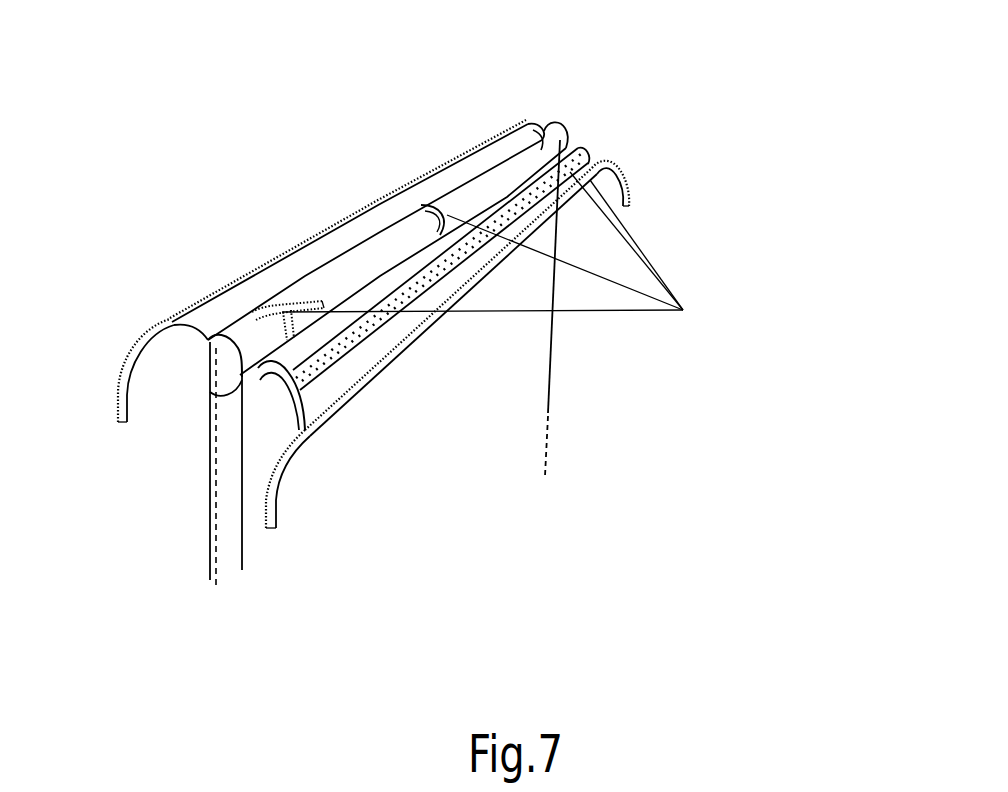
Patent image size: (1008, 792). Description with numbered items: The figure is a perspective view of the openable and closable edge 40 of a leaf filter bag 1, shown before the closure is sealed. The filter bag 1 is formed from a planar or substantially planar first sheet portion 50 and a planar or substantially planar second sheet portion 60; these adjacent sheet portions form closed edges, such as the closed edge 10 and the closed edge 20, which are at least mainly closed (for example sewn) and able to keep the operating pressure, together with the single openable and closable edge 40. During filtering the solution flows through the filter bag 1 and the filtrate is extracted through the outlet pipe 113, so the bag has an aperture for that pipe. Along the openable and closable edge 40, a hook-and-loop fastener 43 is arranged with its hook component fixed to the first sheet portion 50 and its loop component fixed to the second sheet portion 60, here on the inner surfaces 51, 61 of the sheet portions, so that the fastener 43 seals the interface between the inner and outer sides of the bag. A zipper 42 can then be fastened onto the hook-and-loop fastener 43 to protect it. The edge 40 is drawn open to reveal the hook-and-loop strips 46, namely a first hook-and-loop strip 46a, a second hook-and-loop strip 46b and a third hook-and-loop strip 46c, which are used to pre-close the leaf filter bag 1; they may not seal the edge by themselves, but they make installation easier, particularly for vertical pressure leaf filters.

The leaf filter bag 1 is at (620, 120).
The closed edge 10 is at (606, 455).
The closed edge 20 is at (168, 520).
The openable and closable edge 40 is at (367, 125).
The zipper 42 is at (285, 463).
The hook-and-loop fastener 43 is at (360, 380).
The hook-and-loop strip 46 is at (559, 353).
The first hook-and-loop strip 46a is at (552, 257).
The second hook-and-loop strip 46b is at (626, 241).
The third hook-and-loop strip 46c is at (683, 310).
The first sheet portion 50 is at (517, 415).
The inner surface 51 is at (305, 360).
The second sheet portion 60 is at (183, 345).
The inner surface 61 is at (327, 250).
The outlet pipe 113 is at (562, 115).